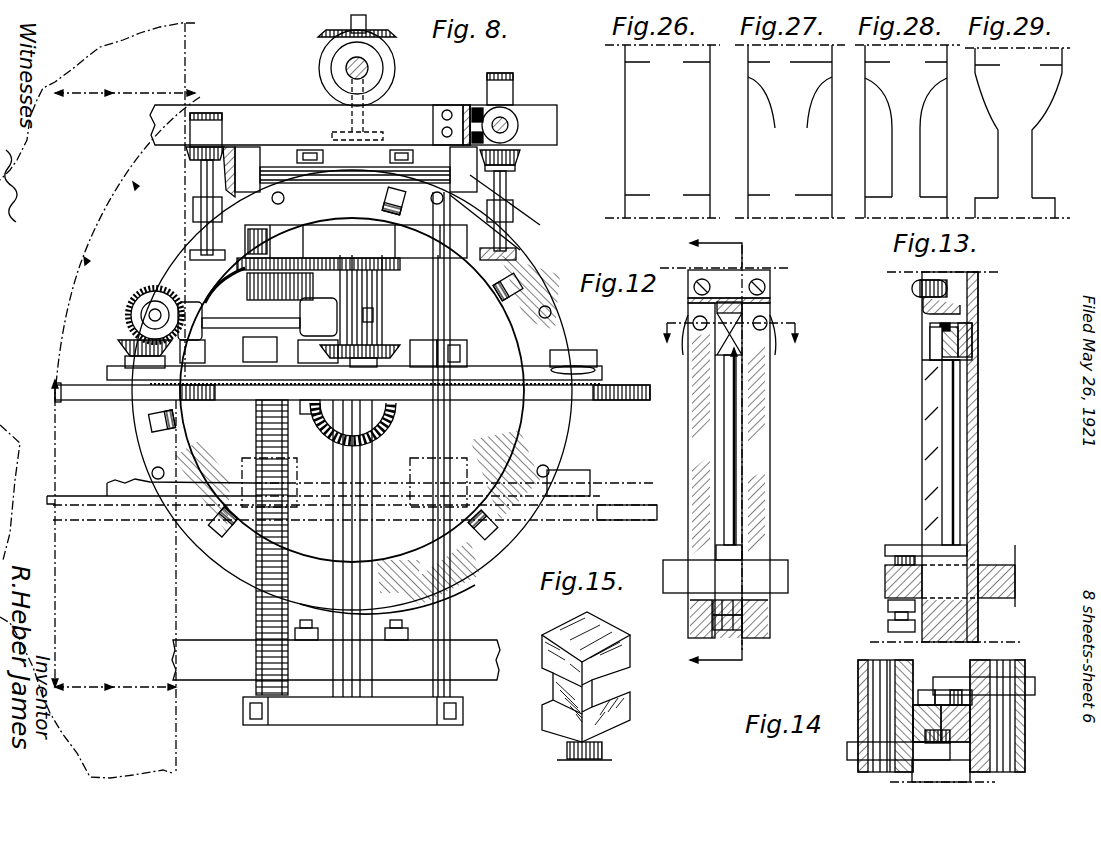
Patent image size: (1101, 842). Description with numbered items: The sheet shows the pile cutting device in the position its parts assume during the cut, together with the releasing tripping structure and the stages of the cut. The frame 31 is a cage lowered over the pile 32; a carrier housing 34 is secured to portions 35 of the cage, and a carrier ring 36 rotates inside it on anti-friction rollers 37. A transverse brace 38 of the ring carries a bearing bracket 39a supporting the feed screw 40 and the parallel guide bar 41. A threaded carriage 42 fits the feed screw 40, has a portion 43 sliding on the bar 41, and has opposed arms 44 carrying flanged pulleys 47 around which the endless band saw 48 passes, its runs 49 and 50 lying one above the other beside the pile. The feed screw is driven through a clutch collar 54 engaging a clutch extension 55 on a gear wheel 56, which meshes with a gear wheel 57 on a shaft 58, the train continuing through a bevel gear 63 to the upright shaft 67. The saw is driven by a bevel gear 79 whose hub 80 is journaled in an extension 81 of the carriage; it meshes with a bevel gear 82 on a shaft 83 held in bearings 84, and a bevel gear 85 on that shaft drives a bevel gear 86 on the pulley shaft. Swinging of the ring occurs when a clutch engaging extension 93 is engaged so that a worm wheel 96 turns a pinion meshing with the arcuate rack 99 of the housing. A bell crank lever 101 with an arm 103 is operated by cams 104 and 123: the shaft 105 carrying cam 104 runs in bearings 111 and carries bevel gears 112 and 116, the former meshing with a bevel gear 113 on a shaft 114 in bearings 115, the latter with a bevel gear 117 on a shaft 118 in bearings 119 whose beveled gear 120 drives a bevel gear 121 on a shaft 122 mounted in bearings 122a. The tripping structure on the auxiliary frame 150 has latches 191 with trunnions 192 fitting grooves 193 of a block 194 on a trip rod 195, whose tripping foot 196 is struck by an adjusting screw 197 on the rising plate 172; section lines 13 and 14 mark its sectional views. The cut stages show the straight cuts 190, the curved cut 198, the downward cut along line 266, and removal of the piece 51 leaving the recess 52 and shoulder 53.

In FIG. 12, the section line 13 is at (705, 450).
In FIG. 12, the section line 14 is at (732, 337).
In FIG. 8, the frame 31 is at (263, 105).
In FIG. 8, the pile 32 is at (178, 590).
In FIG. 26, the pile 32 is at (669, 85).
In FIG. 27, the pile 32 is at (787, 85).
In FIG. 28, the pile 32 is at (907, 83).
In FIG. 29, the pile 32 is at (1019, 83).
In FIG. 8, the carrier housing 34 is at (475, 585).
In FIG. 8, the portions of the cage 35 is at (290, 105).
In FIG. 8, the carrier ring 36 is at (520, 455).
In FIG. 8, the anti-friction rollers 37 is at (520, 285).
In FIG. 8, the transverse brace 38 is at (372, 450).
In FIG. 8, the bearing bracket 39a is at (350, 725).
In FIG. 8, the feed screw 40 is at (256, 430).
In FIG. 8, the guide bar 41 is at (453, 605).
In FIG. 8, the carriage 42 is at (462, 343).
In FIG. 8, the carriage portion 43 is at (468, 352).
In FIG. 8, the opposed arms 44 is at (548, 355).
In FIG. 8, the flanged wheels or pulleys 47 is at (75, 400).
In FIG. 8, the endless band saw 48 is at (480, 400).
In FIG. 8, the upper run of the saw 49 is at (55, 392).
In FIG. 8, the run of the saw 50 is at (640, 385).
In FIG. 8, the piece of the pile 51 is at (487, 630).
In FIG. 28, the piece of the pile 51 is at (877, 138).
In FIG. 29, the recess 52 is at (996, 135).
In FIG. 29, the shoulder 53 is at (985, 198).
In FIG. 8, the clutch collar 54 is at (356, 241).
In FIG. 8, the clutch extension 55 is at (287, 238).
In FIG. 8, the gear wheel 56 is at (277, 198).
In FIG. 8, the gear wheel 57 is at (378, 300).
In FIG. 8, the shaft 58 is at (374, 312).
In FIG. 8, the bevel gear 63 is at (305, 415).
In FIG. 8, the upright shaft 67 is at (351, 22).
In FIG. 8, the bevel gear 79 is at (385, 345).
In FIG. 8, the hub 80 is at (423, 353).
In FIG. 8, the carriage extension 81 is at (385, 418).
In FIG. 8, the bevel gear 82 is at (318, 251).
In FIG. 8, the shaft 83 is at (208, 300).
In FIG. 8, the bearings 84 is at (258, 330).
In FIG. 8, the bevel gear 85 is at (130, 320).
In FIG. 8, the bevel gear 86 is at (118, 346).
In FIG. 8, the clutch engaging extension 93 is at (345, 225).
In FIG. 8, the worm wheel 96 is at (290, 460).
In FIG. 8, the arcuate rack 99 is at (325, 225).
In FIG. 8, the bell crank lever 101 is at (243, 348).
In FIG. 8, the arm of the bell crank lever 103 is at (228, 245).
In FIG. 8, the cam 104 is at (518, 252).
In FIG. 8, the shaft 105 is at (507, 188).
In FIG. 8, the bearings 111 is at (513, 88).
In FIG. 8, the bevel gear 112 is at (517, 116).
In FIG. 8, the bevel gear 113 is at (510, 128).
In FIG. 8, the shaft 114 is at (515, 160).
In FIG. 8, the bearings 115 is at (478, 109).
In FIG. 8, the bevel gear 116 is at (512, 170).
In FIG. 8, the bevel gear 117 is at (472, 208).
In FIG. 8, the shaft 118 is at (348, 170).
In FIG. 8, the bearings 119 is at (250, 147).
In FIG. 8, the beveled gear 120 is at (200, 190).
In FIG. 8, the bevel gear 121 is at (185, 153).
In FIG. 8, the shaft 122 is at (201, 175).
In FIG. 8, the bearings 122a is at (200, 130).
In FIG. 8, the cam 123 is at (192, 255).
In FIG. 12, the auxiliary frame 150 is at (772, 445).
In FIG. 13, the auxiliary frame 150 is at (978, 440).
In FIG. 14, the auxiliary frame 150 is at (858, 740).
In FIG. 12, the plate 172 is at (783, 560).
In FIG. 13, the plate 172 is at (895, 598).
In FIG. 8, the straight cuts 190 is at (100, 98).
In FIG. 26, the straight cuts 190 is at (645, 62).
In FIG. 27, the straight cuts 190 is at (770, 62).
In FIG. 28, the straight cuts 190 is at (888, 62).
In FIG. 29, the straight cuts 190 is at (1030, 65).
In FIG. 12, the latches 191 is at (698, 340).
In FIG. 13, the latches 191 is at (972, 345).
In FIG. 14, the latches 191 is at (941, 719).
In FIG. 12, the trunnions 192 is at (722, 330).
In FIG. 13, the trunnions 192 is at (965, 330).
In FIG. 14, the trunnions 192 is at (950, 690).
In FIG. 12, the grooves 193 is at (725, 350).
In FIG. 13, the grooves 193 is at (950, 327).
In FIG. 14, the grooves 193 is at (925, 690).
In FIG. 15, the grooves 193 is at (545, 680).
In FIG. 12, the block 194 is at (732, 362).
In FIG. 13, the block 194 is at (925, 362).
In FIG. 14, the block 194 is at (913, 710).
In FIG. 15, the block 194 is at (553, 700).
In FIG. 12, the trip rod 195 is at (738, 398).
In FIG. 13, the trip rod 195 is at (958, 385).
In FIG. 15, the trip rod 195 is at (602, 752).
In FIG. 12, the tripping foot 196 is at (735, 548).
In FIG. 13, the tripping foot 196 is at (891, 545).
In FIG. 12, the adjusting screw 197 is at (715, 593).
In FIG. 13, the adjusting screw 197 is at (895, 568).
In FIG. 8, the curved cut 198 is at (116, 213).
In FIG. 27, the curved cut 198 is at (800, 124).
In FIG. 28, the curved cut 198 is at (888, 98).
In FIG. 8, the line of cut 266 is at (57, 474).
In FIG. 28, the line of cut 266 is at (885, 167).